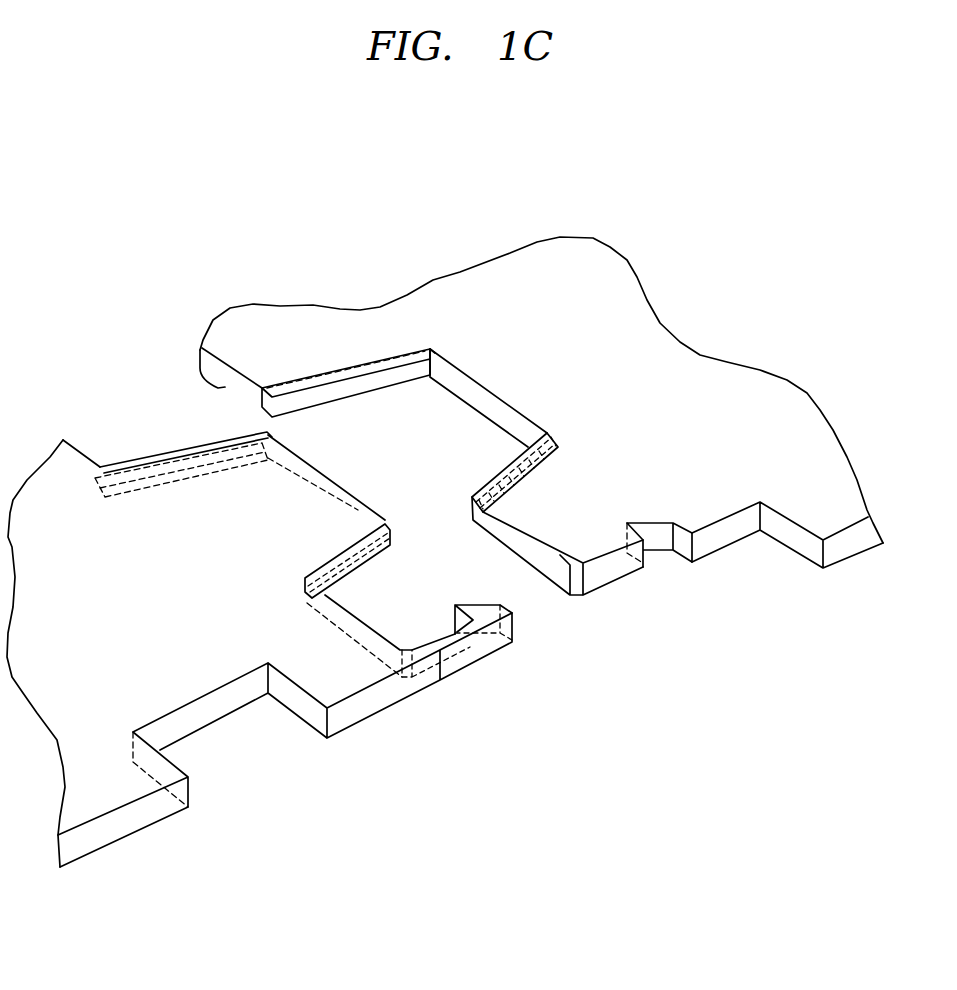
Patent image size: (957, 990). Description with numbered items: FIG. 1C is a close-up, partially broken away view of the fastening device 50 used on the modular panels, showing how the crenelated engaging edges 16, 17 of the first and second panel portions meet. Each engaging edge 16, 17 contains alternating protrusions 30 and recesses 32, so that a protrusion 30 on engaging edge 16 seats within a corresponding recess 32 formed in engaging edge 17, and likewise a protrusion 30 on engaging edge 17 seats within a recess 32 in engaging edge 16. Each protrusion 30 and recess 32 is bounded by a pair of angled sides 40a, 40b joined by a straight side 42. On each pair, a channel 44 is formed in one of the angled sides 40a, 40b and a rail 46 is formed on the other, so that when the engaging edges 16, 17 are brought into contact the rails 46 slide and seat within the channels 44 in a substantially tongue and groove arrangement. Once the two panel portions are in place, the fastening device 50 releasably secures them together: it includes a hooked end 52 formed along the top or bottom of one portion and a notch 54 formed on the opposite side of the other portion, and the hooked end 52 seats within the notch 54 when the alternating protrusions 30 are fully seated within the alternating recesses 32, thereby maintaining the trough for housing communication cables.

The engaging edge 16 is at (80, 448).
The engaging edge 17 is at (217, 388).
The protrusion 30 is at (259, 614).
The recess 32 is at (500, 420).
The angled side 40a is at (353, 382).
The angled side 40b is at (177, 467).
The straight side 42 is at (457, 380).
The channel 44 is at (537, 477).
The rail 46 is at (147, 455).
The fastening device 50 is at (525, 638).
The hooked end 52 is at (457, 607).
The notch 54 is at (663, 540).